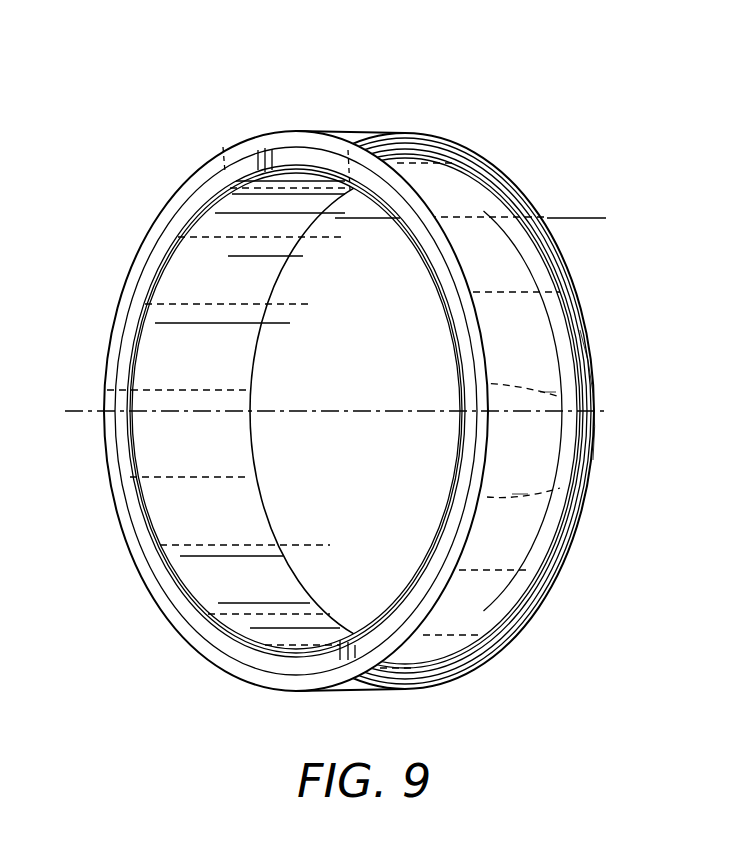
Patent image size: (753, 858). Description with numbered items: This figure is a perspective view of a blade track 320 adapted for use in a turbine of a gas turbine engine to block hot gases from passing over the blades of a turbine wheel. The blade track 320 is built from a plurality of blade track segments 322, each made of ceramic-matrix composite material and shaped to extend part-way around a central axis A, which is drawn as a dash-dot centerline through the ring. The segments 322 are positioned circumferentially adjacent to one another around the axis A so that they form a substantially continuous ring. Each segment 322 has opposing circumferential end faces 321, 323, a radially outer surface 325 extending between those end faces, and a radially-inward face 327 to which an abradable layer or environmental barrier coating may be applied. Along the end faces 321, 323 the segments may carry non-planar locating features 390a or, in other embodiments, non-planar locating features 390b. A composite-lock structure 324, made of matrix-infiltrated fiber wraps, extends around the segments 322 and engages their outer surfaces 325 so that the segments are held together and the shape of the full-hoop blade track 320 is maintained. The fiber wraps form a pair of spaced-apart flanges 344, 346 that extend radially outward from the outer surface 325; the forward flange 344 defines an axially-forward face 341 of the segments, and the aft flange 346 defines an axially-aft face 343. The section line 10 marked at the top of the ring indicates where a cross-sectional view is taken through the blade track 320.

The blade track 320 is at (150, 88).
The circumferential end face 321 is at (299, 128).
The blade track segment 322 is at (240, 152).
The circumferential end face 323 is at (331, 140).
The composite-lock structure 324 is at (435, 214).
The radially outer surface 325 is at (355, 148).
The radially-inward face 327 is at (258, 285).
The axially-forward face 341 is at (133, 268).
The axially-aft face 343 is at (596, 350).
The forward flange 344 is at (378, 137).
The aft flange 346 is at (437, 130).
The non-planar locating feature 390a is at (553, 391).
The non-planar locating feature 390b is at (524, 492).
The section line 10 is at (337, 202).
The central axis A is at (70, 410).